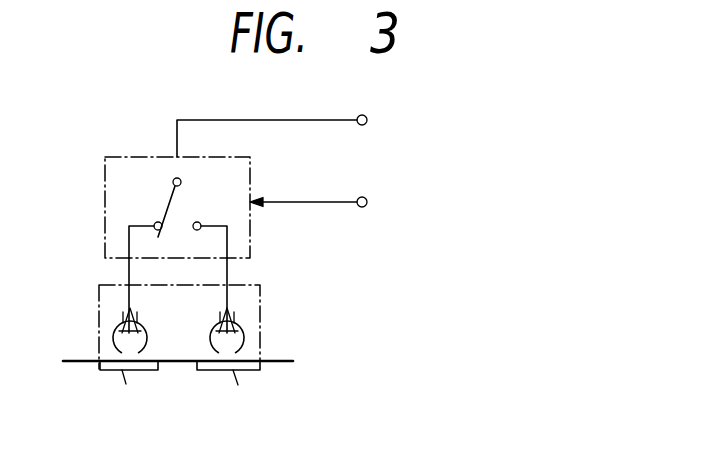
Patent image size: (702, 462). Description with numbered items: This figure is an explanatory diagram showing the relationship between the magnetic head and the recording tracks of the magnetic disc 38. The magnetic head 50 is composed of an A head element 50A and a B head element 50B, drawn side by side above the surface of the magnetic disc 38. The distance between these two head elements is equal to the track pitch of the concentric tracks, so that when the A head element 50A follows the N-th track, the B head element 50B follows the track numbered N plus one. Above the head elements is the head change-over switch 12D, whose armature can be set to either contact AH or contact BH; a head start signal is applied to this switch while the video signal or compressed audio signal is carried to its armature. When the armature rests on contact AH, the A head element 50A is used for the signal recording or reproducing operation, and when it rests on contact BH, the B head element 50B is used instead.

The head change-over switch 12D is at (123, 156).
The magnetic head 50 is at (240, 284).
The A head element 50A is at (111, 333).
The B head element 50B is at (243, 330).
The magnetic disc 38 is at (79, 360).